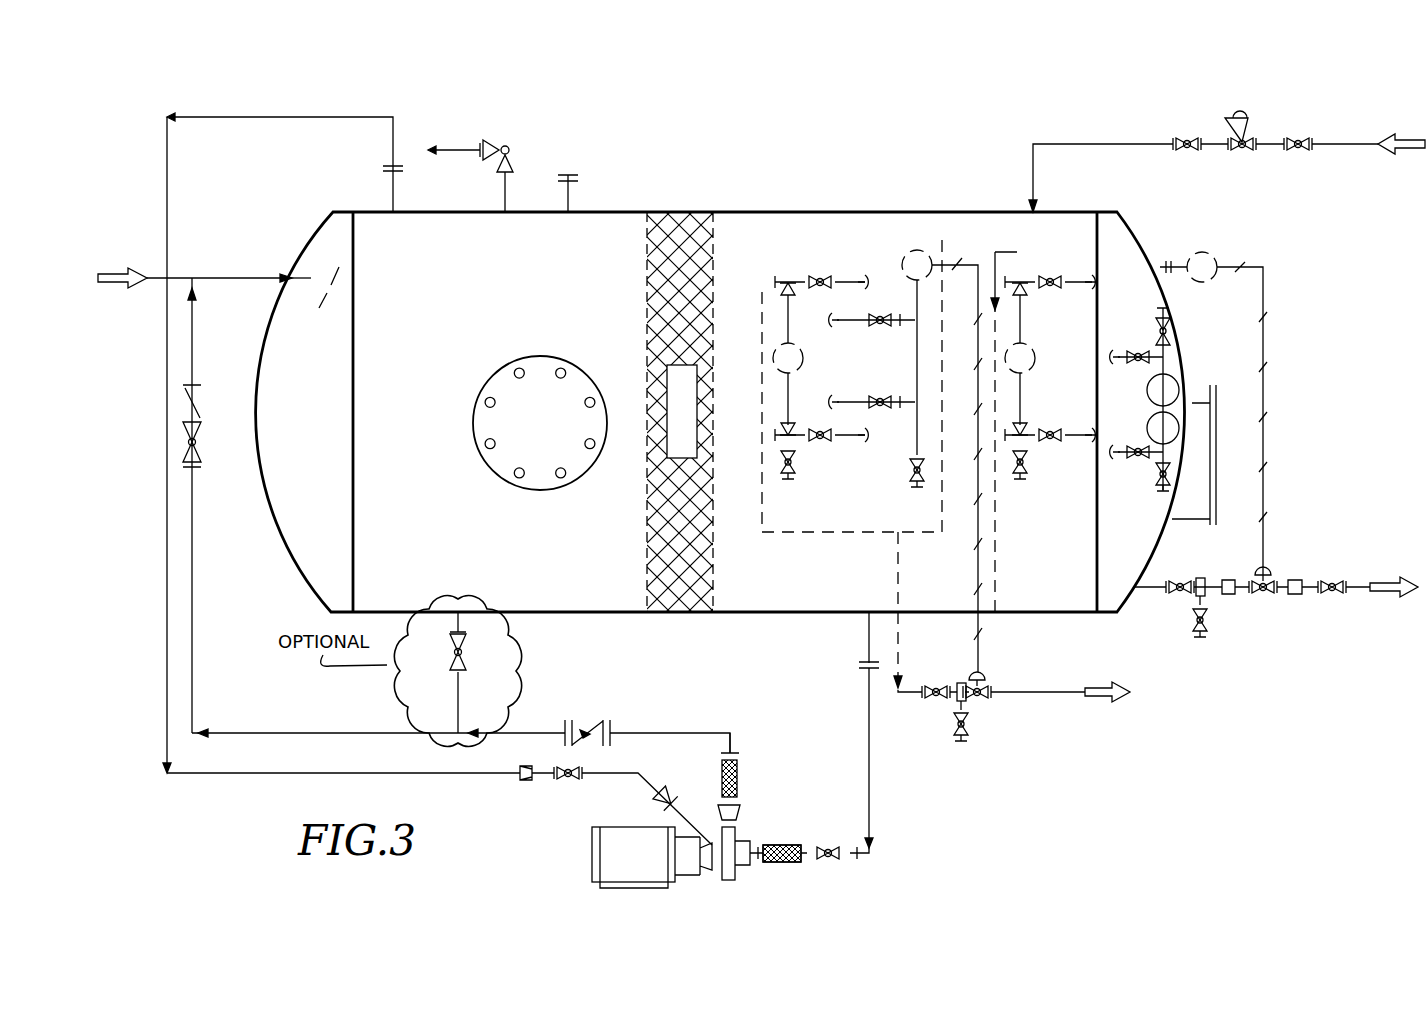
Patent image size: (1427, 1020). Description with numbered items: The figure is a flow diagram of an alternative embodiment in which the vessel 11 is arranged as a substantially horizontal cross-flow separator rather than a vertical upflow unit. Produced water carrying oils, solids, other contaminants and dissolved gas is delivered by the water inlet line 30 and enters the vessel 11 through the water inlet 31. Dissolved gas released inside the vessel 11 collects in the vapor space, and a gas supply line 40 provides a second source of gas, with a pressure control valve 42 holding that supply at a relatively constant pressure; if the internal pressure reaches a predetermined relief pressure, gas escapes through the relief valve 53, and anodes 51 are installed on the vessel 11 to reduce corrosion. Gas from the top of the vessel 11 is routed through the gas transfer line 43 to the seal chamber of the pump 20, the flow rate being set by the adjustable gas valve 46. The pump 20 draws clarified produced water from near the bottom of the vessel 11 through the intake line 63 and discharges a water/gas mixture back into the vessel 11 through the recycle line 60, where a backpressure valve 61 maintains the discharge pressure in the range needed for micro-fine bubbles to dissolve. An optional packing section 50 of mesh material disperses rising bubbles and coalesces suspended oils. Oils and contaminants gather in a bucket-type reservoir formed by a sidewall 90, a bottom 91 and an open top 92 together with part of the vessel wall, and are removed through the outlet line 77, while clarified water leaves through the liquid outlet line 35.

The vessel 11 is at (556, 283).
The pump 20 is at (605, 850).
The water inlet line 30 is at (120, 268).
The water inlet 31 is at (290, 276).
The liquid outlet line 35 is at (1375, 592).
The gas supply line 40 is at (1405, 141).
The pressure control valve 42 is at (1252, 124).
The gas transfer line 43 is at (245, 117).
The adjustable gas valve 46 is at (658, 800).
The packing section 50 is at (718, 283).
The anodes 51 is at (572, 170).
The relief valve 53 is at (505, 136).
The recycle line 60 is at (238, 733).
The backpressure valve 61 is at (200, 444).
The intake line 63 is at (869, 790).
The outlet line 77 is at (1095, 697).
The sidewall 90 is at (762, 450).
The bottom 91 is at (810, 534).
The open top 92 is at (892, 295).